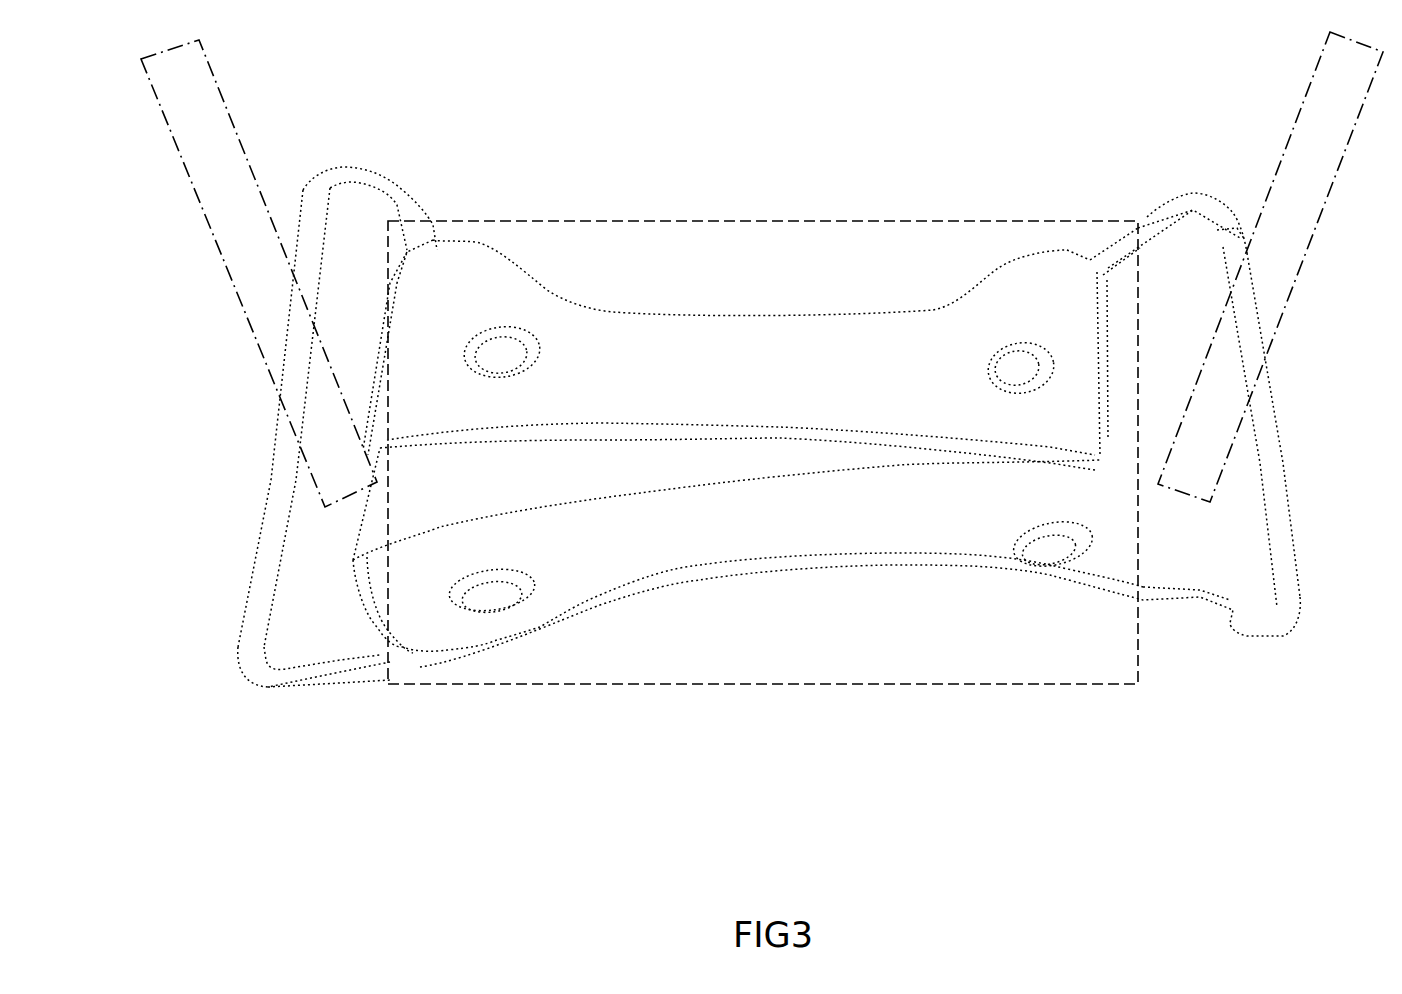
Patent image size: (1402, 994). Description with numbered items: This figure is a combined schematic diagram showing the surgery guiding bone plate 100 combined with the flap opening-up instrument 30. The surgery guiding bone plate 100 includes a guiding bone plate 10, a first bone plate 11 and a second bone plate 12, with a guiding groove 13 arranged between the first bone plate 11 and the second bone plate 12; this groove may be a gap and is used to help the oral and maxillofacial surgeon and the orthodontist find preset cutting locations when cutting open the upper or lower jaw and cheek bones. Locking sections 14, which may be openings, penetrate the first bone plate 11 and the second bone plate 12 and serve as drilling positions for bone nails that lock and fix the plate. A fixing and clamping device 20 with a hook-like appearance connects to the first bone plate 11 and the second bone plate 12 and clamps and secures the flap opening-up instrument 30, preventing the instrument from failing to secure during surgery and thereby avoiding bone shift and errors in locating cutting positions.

The surgery guiding bone plate 100 is at (736, 465).
The guiding bone plate 10 is at (827, 684).
The first bone plate 11 is at (770, 356).
The second bone plate 12 is at (768, 525).
The guiding groove 13 is at (447, 487).
The locking section 14 is at (517, 347).
The fixing and clamping device 20 is at (270, 543).
The flap opening-up instrument 30 is at (168, 85).